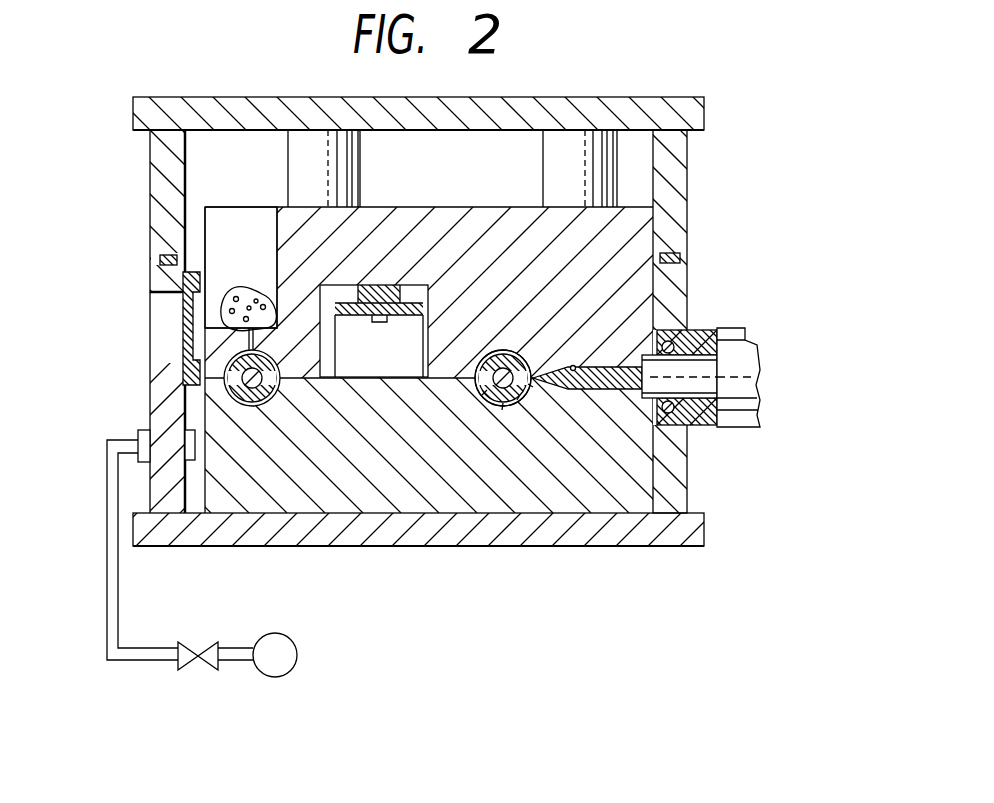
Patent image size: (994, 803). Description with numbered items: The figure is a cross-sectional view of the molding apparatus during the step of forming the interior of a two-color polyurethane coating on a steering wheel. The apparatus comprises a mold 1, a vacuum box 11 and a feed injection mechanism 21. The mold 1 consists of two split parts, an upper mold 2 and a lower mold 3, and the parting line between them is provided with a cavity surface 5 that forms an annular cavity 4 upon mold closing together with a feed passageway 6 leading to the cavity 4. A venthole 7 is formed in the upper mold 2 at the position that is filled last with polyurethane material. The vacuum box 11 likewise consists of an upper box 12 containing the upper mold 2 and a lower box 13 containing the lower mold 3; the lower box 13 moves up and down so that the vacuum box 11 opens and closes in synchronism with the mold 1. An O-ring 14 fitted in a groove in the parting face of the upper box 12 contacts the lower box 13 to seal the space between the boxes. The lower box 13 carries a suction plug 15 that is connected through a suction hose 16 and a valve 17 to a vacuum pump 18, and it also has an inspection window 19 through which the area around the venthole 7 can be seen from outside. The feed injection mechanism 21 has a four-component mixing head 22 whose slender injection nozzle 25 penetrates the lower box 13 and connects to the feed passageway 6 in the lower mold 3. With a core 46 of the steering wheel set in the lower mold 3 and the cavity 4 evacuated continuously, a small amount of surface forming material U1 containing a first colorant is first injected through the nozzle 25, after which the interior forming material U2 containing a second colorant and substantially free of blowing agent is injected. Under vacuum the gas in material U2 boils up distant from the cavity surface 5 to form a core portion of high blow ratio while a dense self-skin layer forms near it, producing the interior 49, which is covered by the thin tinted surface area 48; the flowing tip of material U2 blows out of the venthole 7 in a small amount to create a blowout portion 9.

The mold 1 is at (640, 194).
The upper mold 2 is at (637, 217).
The lower mold 3 is at (632, 480).
The cavity 4 is at (491, 364).
The cavity surface 5 is at (503, 352).
The feed passageway 6 is at (574, 366).
The venthole 7 is at (213, 326).
The blowout portion 9 is at (250, 294).
The vacuum box 11 is at (140, 168).
The upper box 12 is at (157, 212).
The lower box 13 is at (158, 373).
The O-ring 14 is at (160, 260).
The suction plug 15 is at (140, 430).
The suction hose 16 is at (115, 577).
The valve 17 is at (190, 643).
The vacuum pump 18 is at (283, 633).
The inspection window 19 is at (183, 320).
The feed injection mechanism 21 is at (477, 333).
The four-component mixing head 22 is at (738, 338).
The injection nozzle 25 is at (680, 348).
The core 46 is at (516, 350).
The surface area 48 is at (482, 395).
The interior 49 is at (517, 400).
The surface forming RIM polyurethane material U1 is at (502, 410).
The interior forming RIM polyurethane material U2 is at (533, 387).